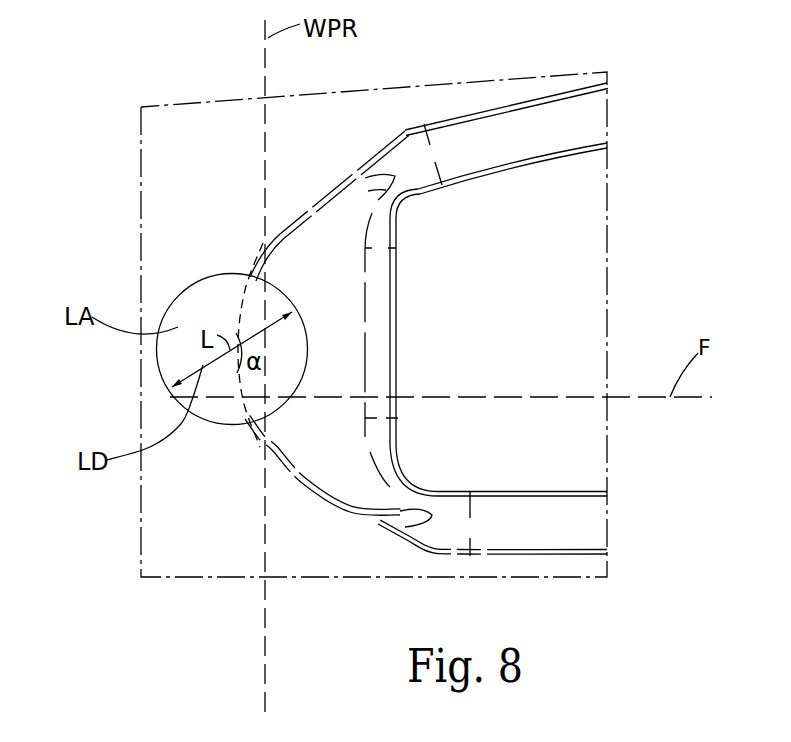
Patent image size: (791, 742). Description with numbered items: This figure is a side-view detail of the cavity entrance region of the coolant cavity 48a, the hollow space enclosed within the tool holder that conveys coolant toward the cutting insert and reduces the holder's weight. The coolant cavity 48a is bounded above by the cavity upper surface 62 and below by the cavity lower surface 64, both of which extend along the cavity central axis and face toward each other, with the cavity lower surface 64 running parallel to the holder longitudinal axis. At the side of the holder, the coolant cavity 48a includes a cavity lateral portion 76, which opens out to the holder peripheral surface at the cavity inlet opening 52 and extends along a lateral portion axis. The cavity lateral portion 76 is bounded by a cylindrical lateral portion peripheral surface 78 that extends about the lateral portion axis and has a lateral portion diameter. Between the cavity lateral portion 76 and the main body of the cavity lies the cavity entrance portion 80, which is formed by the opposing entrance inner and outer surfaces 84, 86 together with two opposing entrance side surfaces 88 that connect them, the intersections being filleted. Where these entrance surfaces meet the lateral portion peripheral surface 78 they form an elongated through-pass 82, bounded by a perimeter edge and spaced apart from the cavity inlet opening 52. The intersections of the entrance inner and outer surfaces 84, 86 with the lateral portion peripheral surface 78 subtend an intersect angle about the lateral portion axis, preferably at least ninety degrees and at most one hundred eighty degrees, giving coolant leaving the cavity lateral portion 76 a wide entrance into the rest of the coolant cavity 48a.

The coolant cavity 48a is at (512, 223).
The cavity upper surface 62 is at (483, 137).
The cavity lower surface 64 is at (550, 532).
The cavity lateral portion 76 is at (201, 268).
The lateral portion peripheral surface 78 is at (188, 288).
The cavity entrance portion 80 is at (300, 444).
The through-pass 82 is at (307, 350).
The entrance inner surface 84 is at (337, 512).
The entrance outer surface 86 is at (323, 195).
The entrance side surface 88 is at (340, 284).
The cavity inlet opening 52 is at (203, 420).